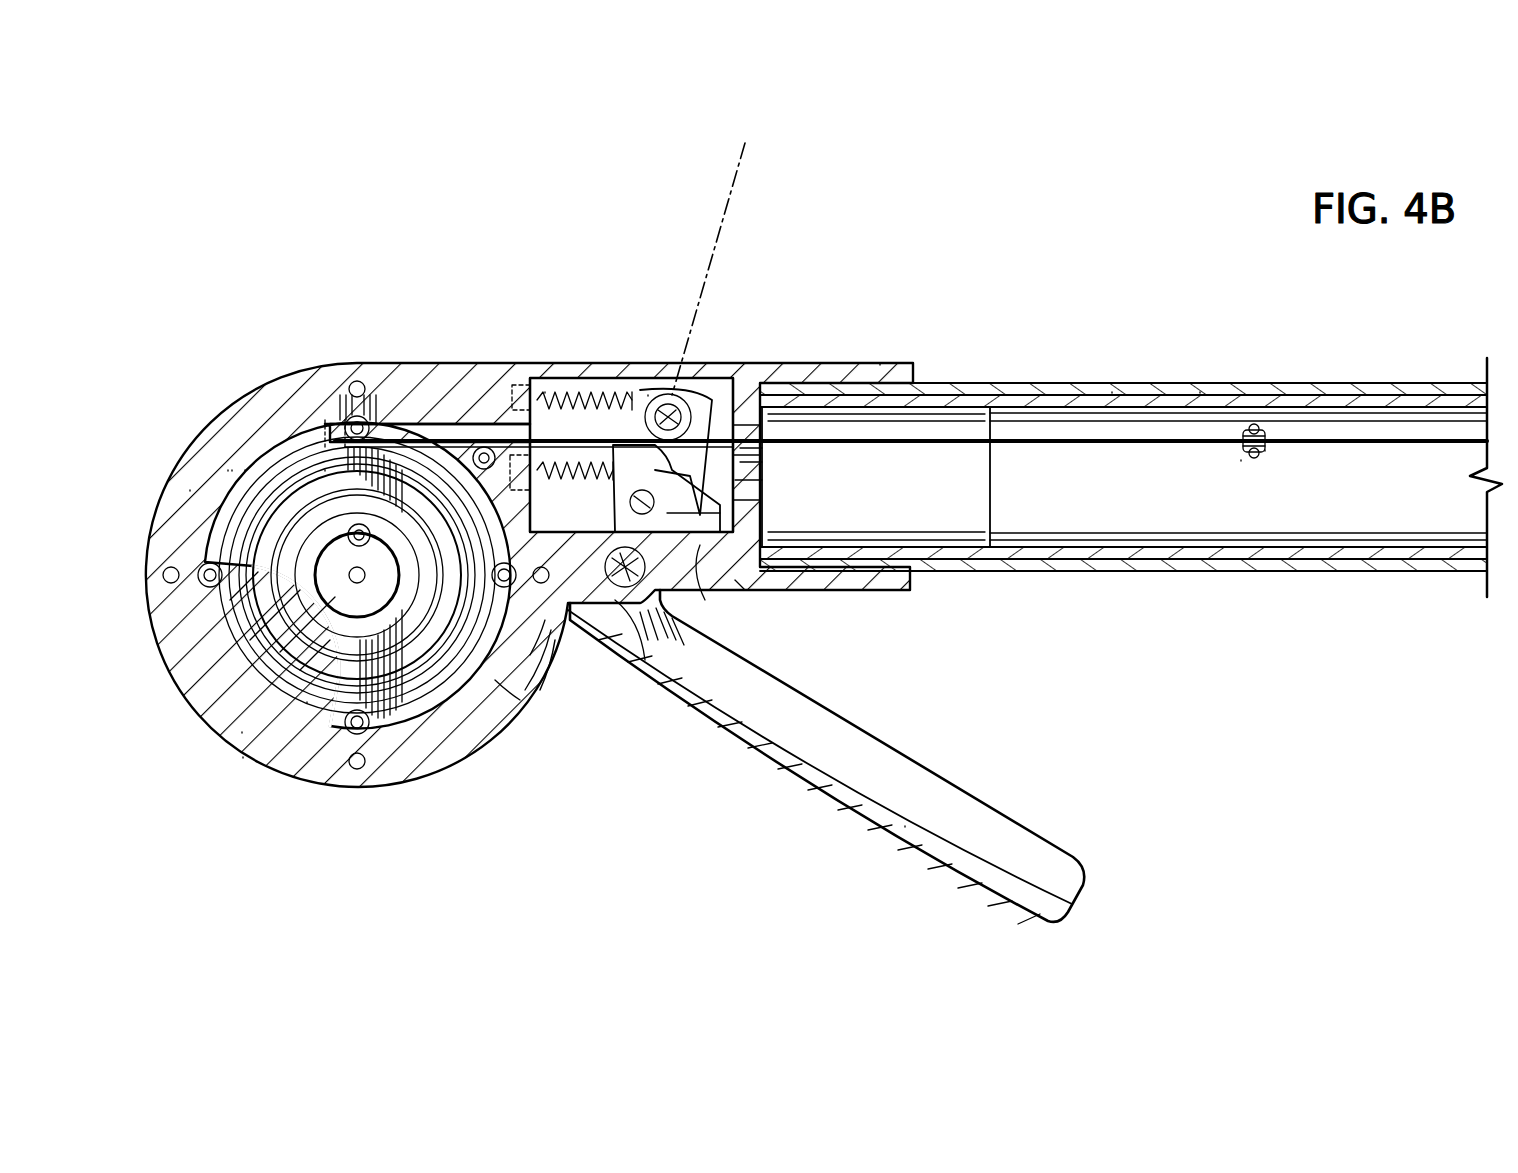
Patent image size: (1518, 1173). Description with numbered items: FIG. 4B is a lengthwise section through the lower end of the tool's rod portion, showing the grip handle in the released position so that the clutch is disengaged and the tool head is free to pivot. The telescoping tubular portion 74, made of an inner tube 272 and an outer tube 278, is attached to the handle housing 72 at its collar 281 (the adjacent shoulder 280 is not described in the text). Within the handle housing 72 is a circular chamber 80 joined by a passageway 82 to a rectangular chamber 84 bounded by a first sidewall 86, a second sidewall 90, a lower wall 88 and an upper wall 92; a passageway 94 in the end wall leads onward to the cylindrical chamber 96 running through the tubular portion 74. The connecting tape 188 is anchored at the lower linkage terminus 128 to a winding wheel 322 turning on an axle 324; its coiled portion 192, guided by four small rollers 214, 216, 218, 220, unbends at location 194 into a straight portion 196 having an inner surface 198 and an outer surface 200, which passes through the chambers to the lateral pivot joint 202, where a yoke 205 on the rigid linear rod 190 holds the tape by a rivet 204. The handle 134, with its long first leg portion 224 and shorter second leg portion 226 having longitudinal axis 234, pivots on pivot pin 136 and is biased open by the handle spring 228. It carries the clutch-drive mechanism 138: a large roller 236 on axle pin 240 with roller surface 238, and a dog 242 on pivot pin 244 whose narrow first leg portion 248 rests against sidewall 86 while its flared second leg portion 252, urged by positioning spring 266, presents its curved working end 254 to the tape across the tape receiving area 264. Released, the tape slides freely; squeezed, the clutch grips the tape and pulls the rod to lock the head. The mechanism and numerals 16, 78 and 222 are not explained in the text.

The ratchet mechanism 16 is at (312, 314).
The handle housing 72 is at (242, 760).
The telescoping tubular portion 74 is at (1300, 392).
The housing flange 78 is at (228, 470).
The circular chamber 80 is at (245, 470).
The passageway 82 is at (495, 392).
The rectangular chamber 84 is at (572, 392).
The first sidewall 86 is at (555, 640).
The lower wall 88 is at (540, 650).
The second sidewall 90 is at (555, 395).
The upper wall 92 is at (762, 448).
The passageway 94 is at (808, 375).
The cylindrical chamber 96 is at (958, 412).
The lower linkage terminus 128 is at (210, 707).
The handle 134 is at (820, 788).
The pivot pin 136 is at (640, 612).
The clutch-drive mechanism 138 is at (690, 380).
The connecting tape 188 is at (307, 702).
The rigid linear rod 190 is at (1390, 442).
The coiled portion 192 is at (232, 472).
The location 194 is at (387, 427).
The straight portion 196 is at (1040, 440).
The inner surface 198 is at (397, 447).
The outer surface 200 is at (410, 445).
The lateral pivot joint 202 is at (1241, 460).
The rivet 204 is at (1262, 455).
The yoke 205 is at (1265, 450).
The roller 214 is at (530, 660).
The roller 216 is at (352, 732).
The roller 218 is at (190, 490).
The roller 220 is at (325, 470).
The plate end 222 is at (425, 445).
The first leg portion 224 is at (905, 826).
The second leg portion 226 is at (700, 590).
The handle spring 228 is at (545, 392).
The longitudinal axis 234 is at (740, 245).
The roller 236 is at (705, 380).
The roller surface 238 is at (720, 380).
The axle pin 240 is at (665, 392).
The dog 242 is at (758, 500).
The pivot pin 244 is at (705, 600).
The first leg portion 248 is at (735, 580).
The second leg portion 252 is at (760, 480).
The working end 254 is at (762, 465).
The tape receiving area 264 is at (648, 395).
The positioning spring 266 is at (535, 380).
The inner tube 272 is at (1112, 392).
The outer tube 278 is at (1200, 392).
The collar 280 is at (900, 378).
The collar 281 is at (880, 364).
The winding wheel 322 is at (243, 757).
The axle 324 is at (242, 732).